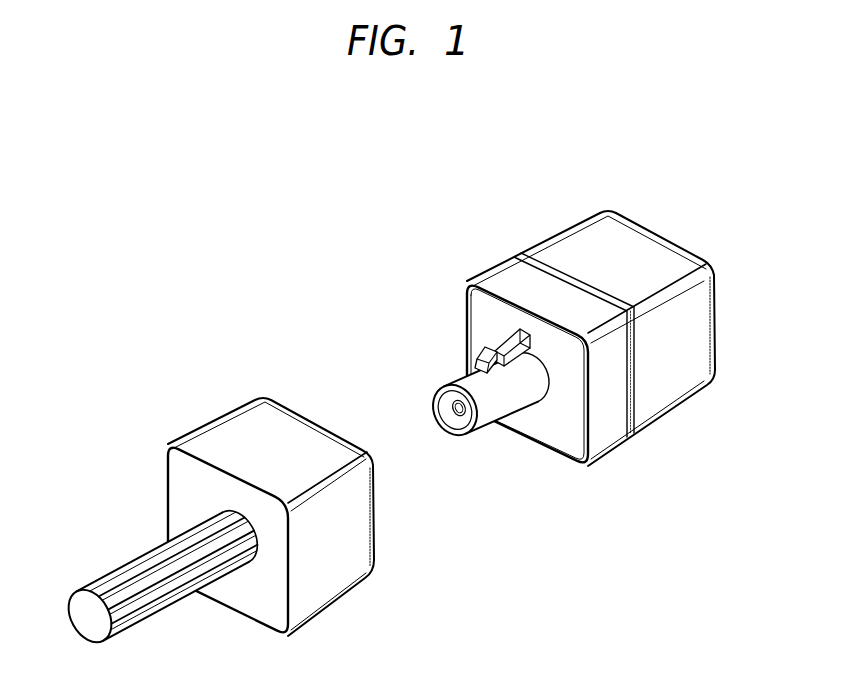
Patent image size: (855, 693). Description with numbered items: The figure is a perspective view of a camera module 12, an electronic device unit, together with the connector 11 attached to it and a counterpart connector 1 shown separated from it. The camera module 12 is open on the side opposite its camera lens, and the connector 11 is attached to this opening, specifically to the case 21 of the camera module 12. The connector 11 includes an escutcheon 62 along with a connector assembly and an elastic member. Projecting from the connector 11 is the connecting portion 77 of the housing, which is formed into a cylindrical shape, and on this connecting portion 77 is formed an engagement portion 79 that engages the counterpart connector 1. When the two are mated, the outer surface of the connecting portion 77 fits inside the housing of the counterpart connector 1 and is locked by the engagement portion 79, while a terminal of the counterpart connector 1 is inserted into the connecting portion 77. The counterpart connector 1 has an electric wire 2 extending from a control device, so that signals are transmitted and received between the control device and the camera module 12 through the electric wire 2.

The counterpart connector 1 is at (212, 421).
The electric wire 2 is at (125, 572).
The connector 11 is at (456, 301).
The camera module 12 is at (584, 212).
The case 21 is at (681, 411).
The escutcheon 62 is at (578, 467).
The connecting portion 77 is at (490, 414).
The engagement portion 79 is at (453, 345).